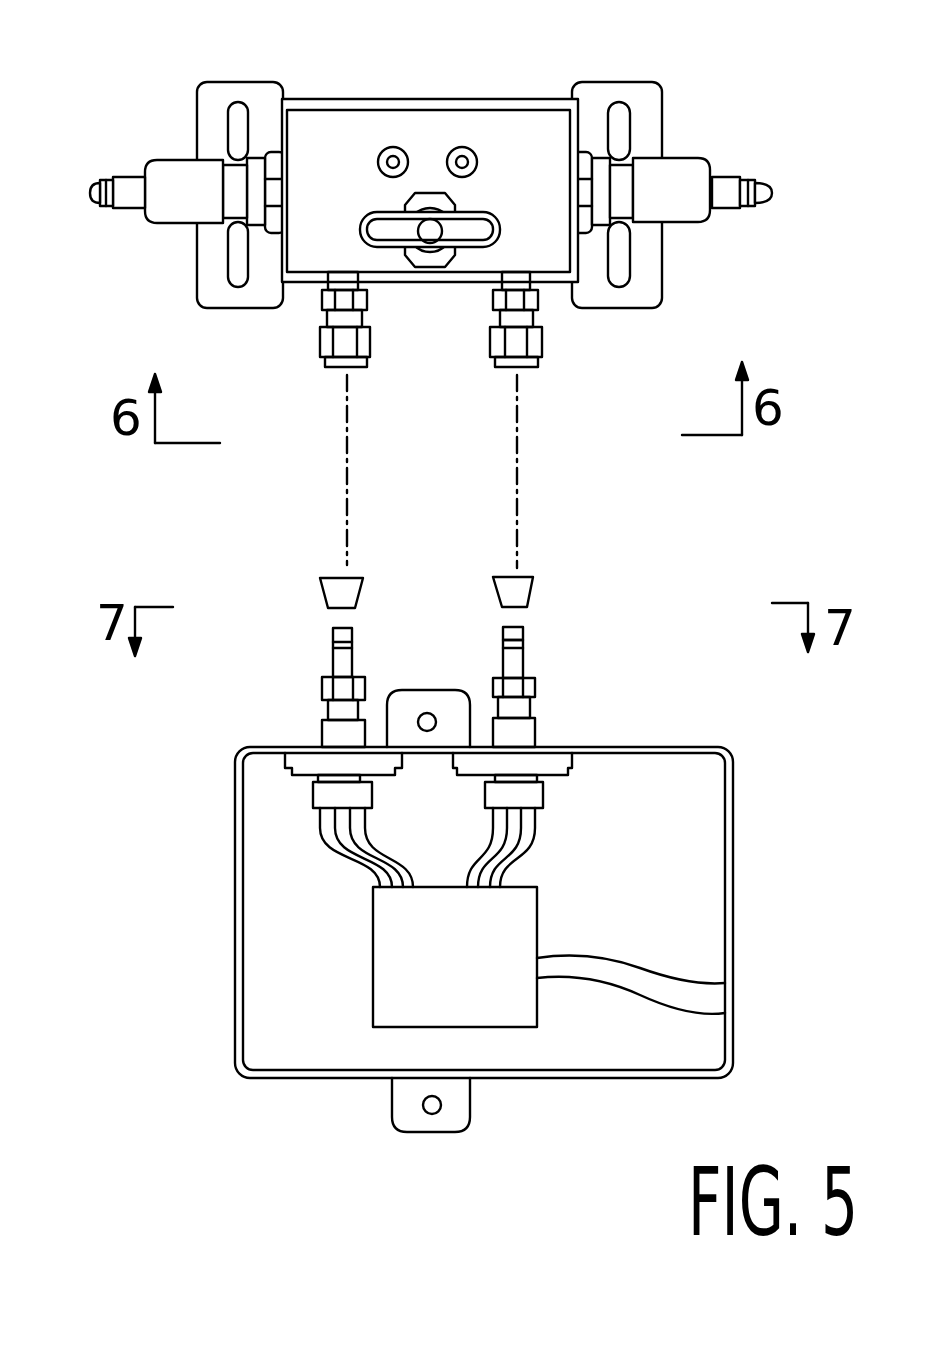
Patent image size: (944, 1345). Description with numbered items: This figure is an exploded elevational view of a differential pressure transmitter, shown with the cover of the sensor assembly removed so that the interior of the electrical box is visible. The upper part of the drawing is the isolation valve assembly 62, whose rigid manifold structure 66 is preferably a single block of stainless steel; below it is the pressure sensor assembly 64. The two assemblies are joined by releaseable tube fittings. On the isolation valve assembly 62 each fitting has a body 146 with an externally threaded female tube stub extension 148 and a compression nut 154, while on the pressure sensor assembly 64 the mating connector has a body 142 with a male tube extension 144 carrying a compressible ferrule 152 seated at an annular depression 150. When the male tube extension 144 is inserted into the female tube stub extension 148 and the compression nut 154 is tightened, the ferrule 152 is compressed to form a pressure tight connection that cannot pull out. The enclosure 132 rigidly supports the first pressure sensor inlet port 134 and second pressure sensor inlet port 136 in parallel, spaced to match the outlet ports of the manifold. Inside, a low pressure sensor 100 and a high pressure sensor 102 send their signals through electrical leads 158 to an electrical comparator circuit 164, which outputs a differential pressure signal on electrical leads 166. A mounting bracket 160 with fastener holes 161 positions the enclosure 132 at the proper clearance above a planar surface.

The isolation valve assembly 62 is at (431, 219).
The rigid manifold structure 66 is at (520, 125).
The body 146 is at (528, 312).
The female tube stub extension 148 is at (503, 318).
The compression nut 154 is at (520, 345).
The ferrule 152 is at (527, 590).
The first pressure sensor inlet port 134 is at (337, 668).
The annular depression 150 is at (505, 635).
The male tube extension 144 is at (525, 653).
The second pressure sensor inlet port 136 is at (525, 668).
The body 142 is at (533, 693).
The pressure sensor 100 is at (305, 760).
The pressure sensor 102 is at (550, 760).
The enclosure 132 is at (665, 745).
The electrical leads 158 is at (345, 850).
The electrical comparator circuit 164 is at (455, 957).
The electrical leads 166 is at (596, 980).
The mounting bracket 160 is at (432, 1105).
The fastener holes 161 is at (422, 1107).
The pressure sensor assembly 64 is at (385, 824).